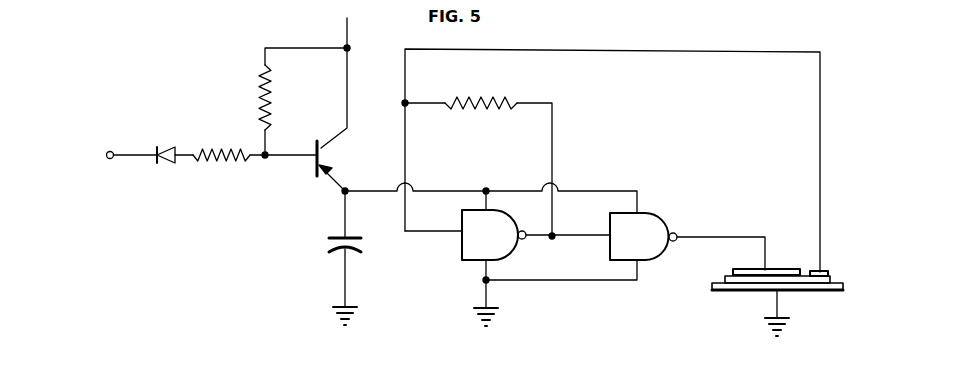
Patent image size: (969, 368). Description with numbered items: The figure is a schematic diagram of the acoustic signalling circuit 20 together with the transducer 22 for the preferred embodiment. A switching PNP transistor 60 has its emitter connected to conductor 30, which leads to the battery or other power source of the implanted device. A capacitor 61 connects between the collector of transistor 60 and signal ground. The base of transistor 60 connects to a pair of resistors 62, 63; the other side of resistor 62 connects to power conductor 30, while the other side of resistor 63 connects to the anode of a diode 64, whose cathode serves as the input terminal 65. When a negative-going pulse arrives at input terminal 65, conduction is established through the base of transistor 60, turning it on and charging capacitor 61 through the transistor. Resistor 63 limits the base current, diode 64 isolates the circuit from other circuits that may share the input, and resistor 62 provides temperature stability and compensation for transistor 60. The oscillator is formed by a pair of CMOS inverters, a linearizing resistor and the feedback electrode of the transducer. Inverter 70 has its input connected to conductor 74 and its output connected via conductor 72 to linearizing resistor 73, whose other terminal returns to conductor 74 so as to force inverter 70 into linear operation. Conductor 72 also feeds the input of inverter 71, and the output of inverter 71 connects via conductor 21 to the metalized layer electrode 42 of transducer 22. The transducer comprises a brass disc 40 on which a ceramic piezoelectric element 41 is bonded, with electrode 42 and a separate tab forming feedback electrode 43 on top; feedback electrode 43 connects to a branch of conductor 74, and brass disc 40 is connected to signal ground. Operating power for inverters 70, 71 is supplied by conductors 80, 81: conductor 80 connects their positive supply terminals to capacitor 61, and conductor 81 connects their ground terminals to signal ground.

The acoustic signalling circuit 20 is at (273, 104).
The conductor 21 is at (698, 236).
The transducer 22 is at (751, 289).
The conductor 30 is at (350, 25).
The brass disc 40 is at (733, 292).
The ceramic piezoelectric element 41 is at (724, 279).
The metalized layer electrode 42 is at (735, 270).
The feedback electrode 43 is at (817, 272).
The switching PNP transistor 60 is at (336, 158).
The capacitor 61 is at (332, 236).
The resistor 62 is at (272, 92).
The resistor 63 is at (214, 150).
The diode 64 is at (163, 147).
The input terminal 65 is at (110, 150).
The inverter 70 is at (460, 259).
The inverter 71 is at (612, 255).
The conductor 72 is at (566, 239).
The linearizing resistor 73 is at (495, 101).
The conductor 74 is at (407, 147).
The conductor 80 is at (443, 191).
The conductor 81 is at (551, 283).